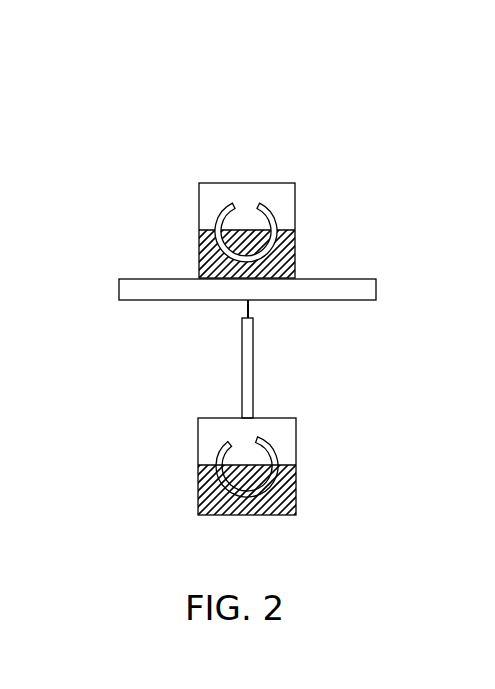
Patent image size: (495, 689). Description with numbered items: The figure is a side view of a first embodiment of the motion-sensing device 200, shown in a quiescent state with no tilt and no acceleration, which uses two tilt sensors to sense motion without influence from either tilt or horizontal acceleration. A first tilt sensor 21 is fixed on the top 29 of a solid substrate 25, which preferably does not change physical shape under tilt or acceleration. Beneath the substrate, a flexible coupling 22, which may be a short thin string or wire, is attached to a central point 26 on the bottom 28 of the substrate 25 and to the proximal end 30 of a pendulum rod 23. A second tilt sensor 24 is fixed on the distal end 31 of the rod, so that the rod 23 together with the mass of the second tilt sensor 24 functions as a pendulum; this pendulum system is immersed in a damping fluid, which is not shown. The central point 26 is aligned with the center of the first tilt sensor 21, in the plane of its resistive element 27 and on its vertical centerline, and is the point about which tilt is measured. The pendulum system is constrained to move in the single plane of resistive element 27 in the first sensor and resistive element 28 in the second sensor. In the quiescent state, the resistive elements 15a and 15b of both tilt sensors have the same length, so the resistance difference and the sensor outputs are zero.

The motion-sensing device 200 is at (198, 70).
The first tilt sensor 21 is at (272, 183).
The flexible coupling 22 is at (243, 313).
The pendulum rod 23 is at (248, 380).
The second tilt sensor 24 is at (297, 483).
The substrate 25 is at (327, 280).
The central point 26 is at (254, 302).
The resistive element 27 is at (229, 201).
The bottom of substrate / resistive element 28 is at (147, 302).
The top of substrate 29 is at (146, 277).
The proximal end 30 is at (237, 321).
The distal end 31 is at (258, 415).
The resistive element 15a is at (216, 227).
The resistive element 15b is at (277, 218).